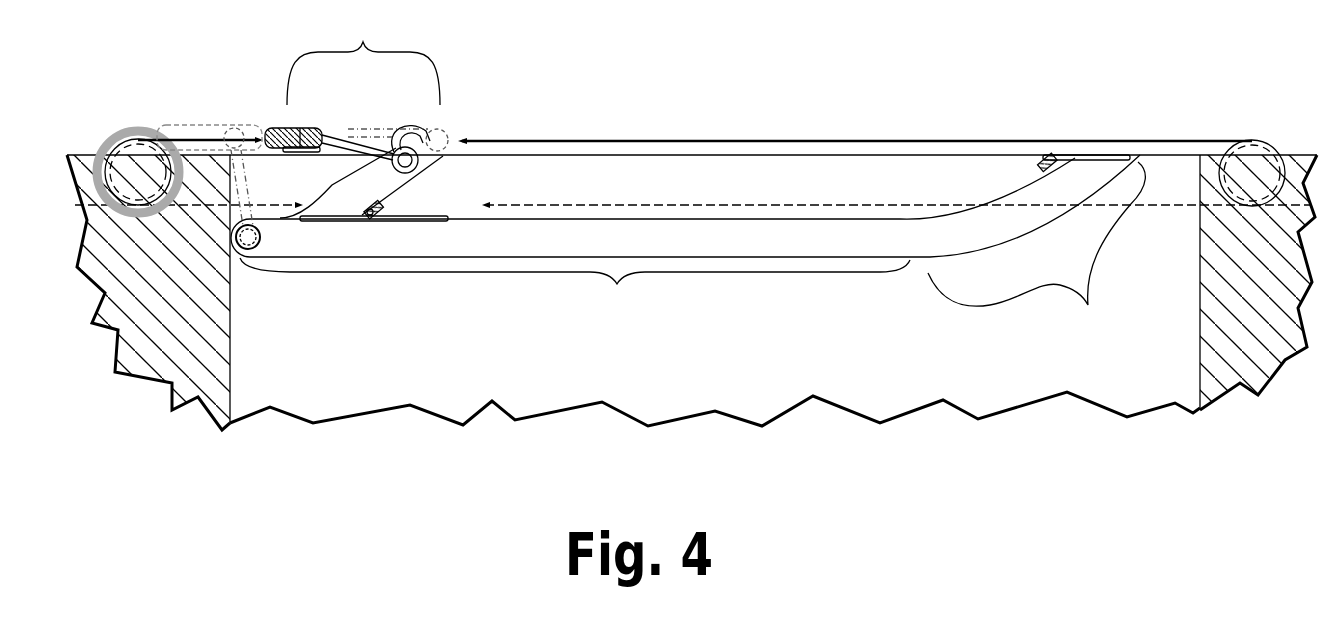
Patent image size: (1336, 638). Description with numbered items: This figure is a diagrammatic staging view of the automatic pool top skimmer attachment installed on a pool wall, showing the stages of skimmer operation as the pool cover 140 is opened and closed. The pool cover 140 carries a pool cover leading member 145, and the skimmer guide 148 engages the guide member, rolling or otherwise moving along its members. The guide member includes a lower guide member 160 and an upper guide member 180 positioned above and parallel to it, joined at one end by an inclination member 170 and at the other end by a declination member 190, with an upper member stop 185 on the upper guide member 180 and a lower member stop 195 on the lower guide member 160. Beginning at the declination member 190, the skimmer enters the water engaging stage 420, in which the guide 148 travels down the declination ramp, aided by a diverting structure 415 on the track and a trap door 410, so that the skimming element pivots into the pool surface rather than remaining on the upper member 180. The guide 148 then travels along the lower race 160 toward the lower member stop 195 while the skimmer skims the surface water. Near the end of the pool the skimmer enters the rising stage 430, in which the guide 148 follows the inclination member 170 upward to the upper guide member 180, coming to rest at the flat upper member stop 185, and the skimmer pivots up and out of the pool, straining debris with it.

The pool cover 140 is at (133, 130).
The pool cover leading member 145 is at (281, 128).
The skimmer guide 148 is at (422, 166).
The lower guide member 160 is at (575, 294).
The inclination member 170 is at (1030, 230).
The upper guide member 180 is at (623, 155).
The upper member stop 185 is at (1218, 154).
The declination member 190 is at (388, 207).
The lower member stop 195 is at (238, 263).
The trap door 410 is at (334, 217).
The diverting structure 415 is at (416, 128).
The skimmer drops down to lower guide member stage 420 is at (363, 57).
The skimmer rises up to upper guide member stage 430 is at (1036, 249).